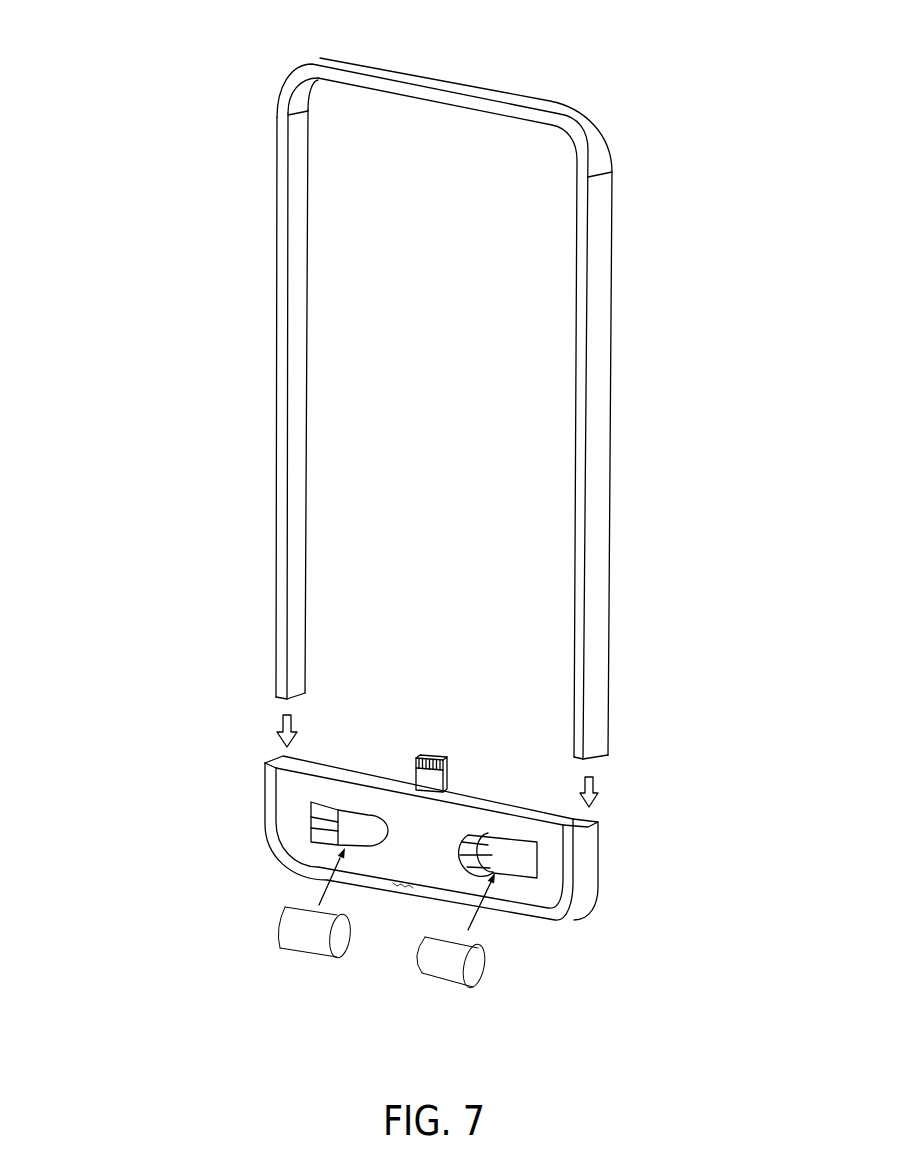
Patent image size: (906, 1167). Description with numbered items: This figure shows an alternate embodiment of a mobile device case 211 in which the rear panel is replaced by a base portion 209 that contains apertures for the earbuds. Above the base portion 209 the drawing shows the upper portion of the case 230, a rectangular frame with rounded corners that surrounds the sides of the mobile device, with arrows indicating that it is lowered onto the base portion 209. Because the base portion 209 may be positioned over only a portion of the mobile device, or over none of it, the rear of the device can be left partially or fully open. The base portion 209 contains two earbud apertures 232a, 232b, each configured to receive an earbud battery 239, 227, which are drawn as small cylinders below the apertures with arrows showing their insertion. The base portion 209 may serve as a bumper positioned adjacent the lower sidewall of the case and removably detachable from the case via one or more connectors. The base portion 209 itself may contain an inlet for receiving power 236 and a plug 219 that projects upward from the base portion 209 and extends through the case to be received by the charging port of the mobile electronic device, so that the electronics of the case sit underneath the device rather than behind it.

The mobile device case 211 is at (183, 60).
The upper case portion (frame) 230 is at (390, 360).
The plug 219 is at (423, 612).
The base portion 209 is at (285, 804).
The inlet for receiving power 236 is at (423, 872).
The earbud aperture 232a is at (373, 836).
The earbud aperture 232b is at (517, 857).
The earbud battery 239 is at (312, 945).
The earbud battery 227 is at (473, 972).